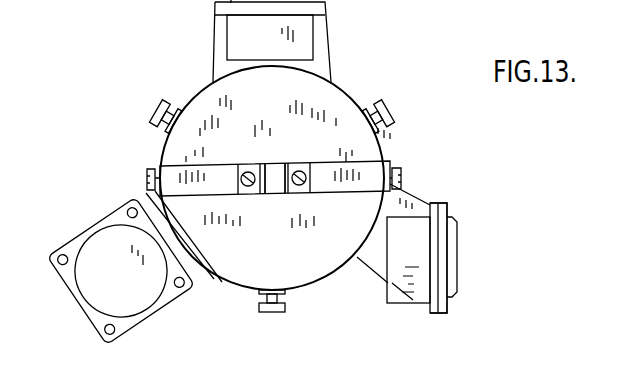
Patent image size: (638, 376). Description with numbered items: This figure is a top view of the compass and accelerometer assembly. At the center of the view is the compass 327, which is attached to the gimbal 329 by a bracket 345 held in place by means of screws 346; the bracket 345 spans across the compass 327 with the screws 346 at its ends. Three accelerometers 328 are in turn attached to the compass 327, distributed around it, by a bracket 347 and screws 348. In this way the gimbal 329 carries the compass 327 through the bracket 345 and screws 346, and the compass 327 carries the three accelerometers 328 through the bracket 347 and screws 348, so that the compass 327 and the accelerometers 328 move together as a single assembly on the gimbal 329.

The compass 327 is at (327, 100).
The accelerometers 328 is at (247, 25).
The gimbal 329 is at (283, 195).
The bracket 345 is at (222, 177).
The screws 346 is at (147, 171).
The bracket 347 is at (418, 205).
The screws 348 is at (284, 310).